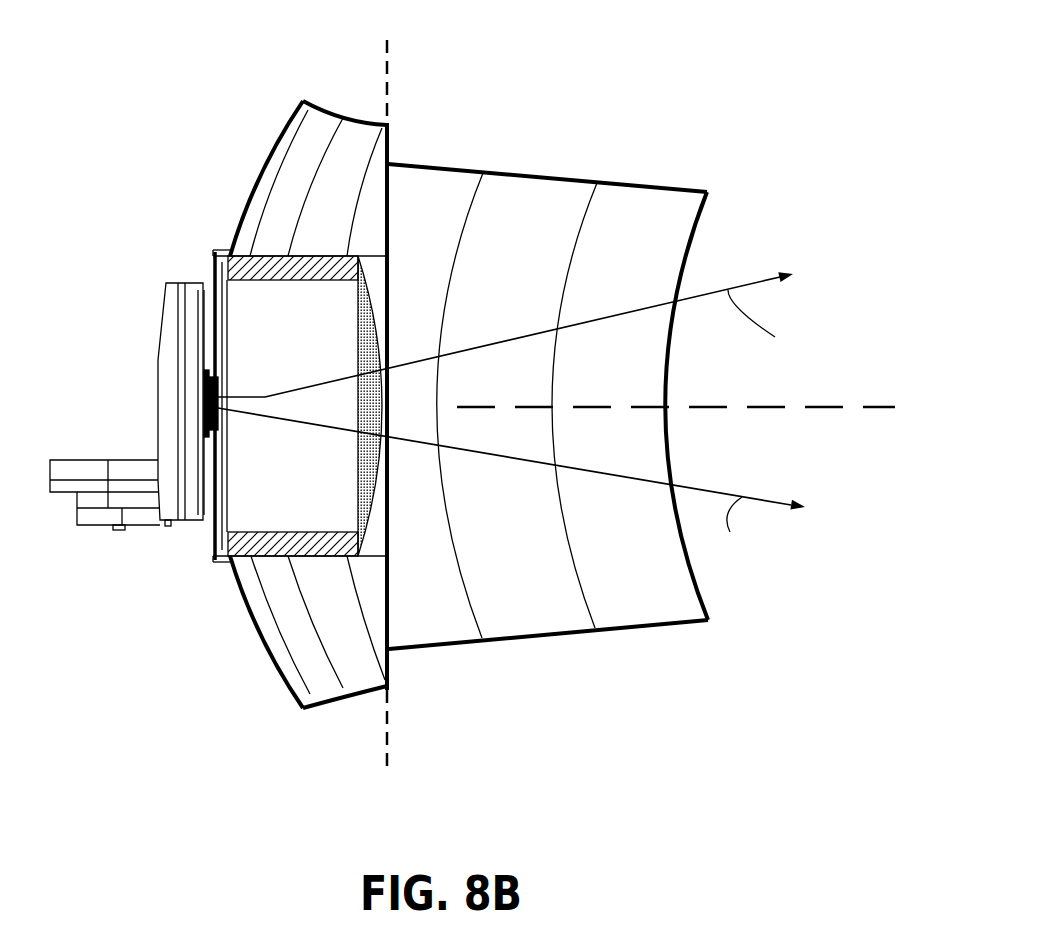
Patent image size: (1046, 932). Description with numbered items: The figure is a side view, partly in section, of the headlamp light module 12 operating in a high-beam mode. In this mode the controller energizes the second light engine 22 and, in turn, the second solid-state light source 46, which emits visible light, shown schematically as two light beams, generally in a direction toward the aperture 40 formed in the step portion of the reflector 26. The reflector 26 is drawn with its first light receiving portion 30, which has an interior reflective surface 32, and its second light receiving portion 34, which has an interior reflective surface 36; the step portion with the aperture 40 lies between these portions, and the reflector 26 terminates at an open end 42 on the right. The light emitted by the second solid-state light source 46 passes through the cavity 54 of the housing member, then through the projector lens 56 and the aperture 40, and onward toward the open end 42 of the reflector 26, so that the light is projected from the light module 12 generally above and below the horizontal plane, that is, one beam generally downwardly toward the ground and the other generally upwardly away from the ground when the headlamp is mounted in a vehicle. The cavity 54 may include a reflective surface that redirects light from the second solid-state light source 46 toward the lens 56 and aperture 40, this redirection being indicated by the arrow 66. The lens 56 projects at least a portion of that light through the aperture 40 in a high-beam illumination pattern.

The light module 12 is at (46, 35).
The second light engine 22 is at (136, 337).
The reflector 26 is at (222, 134).
The first light receiving portion of reflector 30 is at (252, 608).
The interior reflective surface of first light receiving portion 32 is at (349, 624).
The second light receiving portion of reflector 34 is at (520, 163).
The interior reflective surface of second light receiving portion 36 is at (535, 589).
The aperture in step portion 40 is at (380, 268).
The open end of reflector 42 is at (695, 235).
The second solid-state light source 46 is at (224, 420).
The cavity of housing member 54 is at (330, 512).
The projector lens 56 is at (372, 490).
The reflection of light from cavity 66 is at (262, 382).